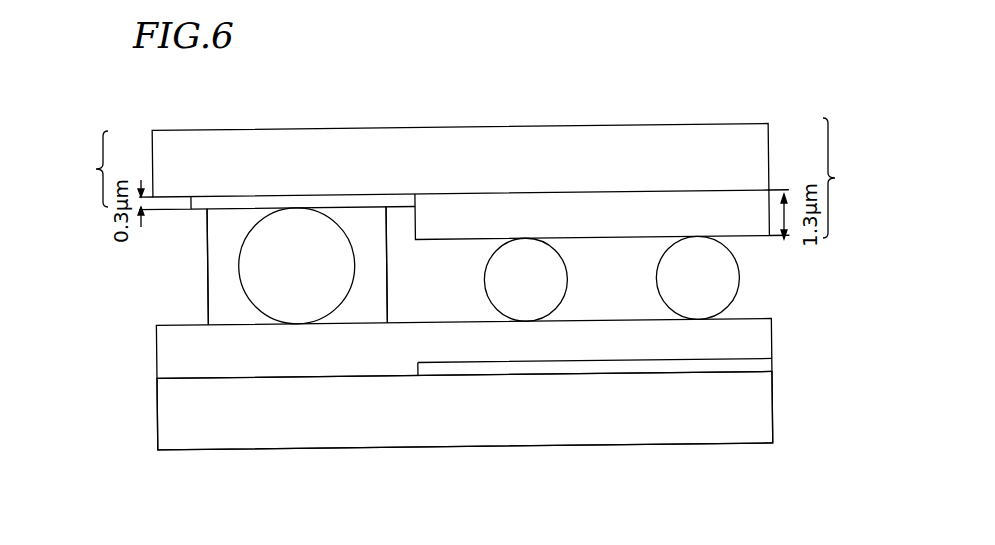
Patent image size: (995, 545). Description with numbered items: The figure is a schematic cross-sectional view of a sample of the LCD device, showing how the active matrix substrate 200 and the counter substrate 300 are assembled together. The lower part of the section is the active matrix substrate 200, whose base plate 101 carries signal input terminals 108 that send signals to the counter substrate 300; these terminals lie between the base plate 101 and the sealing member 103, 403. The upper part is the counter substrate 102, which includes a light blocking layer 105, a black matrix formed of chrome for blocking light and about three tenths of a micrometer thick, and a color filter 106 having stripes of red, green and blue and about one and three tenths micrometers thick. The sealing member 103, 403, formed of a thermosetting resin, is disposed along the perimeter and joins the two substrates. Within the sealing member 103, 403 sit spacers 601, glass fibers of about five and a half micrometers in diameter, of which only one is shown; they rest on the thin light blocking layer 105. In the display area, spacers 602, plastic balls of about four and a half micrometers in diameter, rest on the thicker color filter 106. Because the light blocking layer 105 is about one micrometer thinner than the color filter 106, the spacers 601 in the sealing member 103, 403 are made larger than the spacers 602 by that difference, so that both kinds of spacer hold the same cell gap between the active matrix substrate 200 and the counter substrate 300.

The base plate 101 is at (238, 417).
The counter substrate 102 is at (207, 157).
The sealing member 103 is at (223, 290).
The sealing member 403 is at (297, 266).
The light blocking layer 105 is at (284, 199).
The color filter 106 is at (652, 208).
The signal input terminals 108 is at (638, 368).
The active matrix substrate 200 is at (140, 325).
The counter substrate 300 is at (467, 178).
The spacers 601 is at (307, 313).
The spacers 602 is at (525, 255).